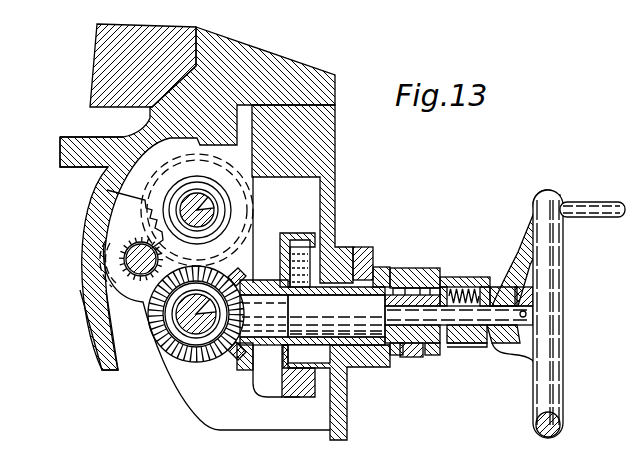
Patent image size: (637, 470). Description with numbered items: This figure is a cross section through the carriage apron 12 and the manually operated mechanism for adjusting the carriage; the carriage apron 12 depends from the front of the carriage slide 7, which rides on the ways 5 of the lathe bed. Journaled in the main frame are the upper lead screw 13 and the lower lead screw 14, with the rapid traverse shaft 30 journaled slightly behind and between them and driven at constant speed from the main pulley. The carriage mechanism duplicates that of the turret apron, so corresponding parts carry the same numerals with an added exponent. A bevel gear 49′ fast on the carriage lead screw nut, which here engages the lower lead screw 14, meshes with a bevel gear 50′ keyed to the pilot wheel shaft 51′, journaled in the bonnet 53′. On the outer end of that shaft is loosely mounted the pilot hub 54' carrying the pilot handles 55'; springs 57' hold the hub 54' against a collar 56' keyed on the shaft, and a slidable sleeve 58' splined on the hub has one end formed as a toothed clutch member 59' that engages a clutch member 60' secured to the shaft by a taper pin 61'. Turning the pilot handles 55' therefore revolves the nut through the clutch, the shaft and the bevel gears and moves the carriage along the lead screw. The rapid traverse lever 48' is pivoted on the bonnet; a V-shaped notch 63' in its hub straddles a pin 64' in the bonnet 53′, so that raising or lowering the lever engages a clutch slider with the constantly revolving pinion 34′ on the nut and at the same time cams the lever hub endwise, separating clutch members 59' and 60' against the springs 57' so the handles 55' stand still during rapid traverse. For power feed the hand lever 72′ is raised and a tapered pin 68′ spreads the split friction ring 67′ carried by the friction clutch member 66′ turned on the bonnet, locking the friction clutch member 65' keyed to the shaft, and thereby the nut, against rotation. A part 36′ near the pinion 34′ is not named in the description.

The ways 5 is at (190, 78).
The carriage slide 7 is at (262, 56).
The carriage apron 12 is at (327, 142).
The lead screw 13 is at (203, 202).
The lead screw 14 is at (183, 325).
The rapid traverse shaft 30 is at (130, 263).
The pinion 34′ is at (143, 202).
The pawl 36′ is at (122, 238).
The hand lever 48' is at (412, 287).
The bevel gear 49′ is at (182, 367).
The bevel gear 50′ is at (245, 355).
The pilot wheel shaft 51′ is at (386, 316).
The bonnet 53′ is at (348, 426).
The pilot hub 54' is at (523, 283).
The pilot handles 55' is at (579, 314).
The collar 56' is at (555, 276).
The springs 57' is at (469, 277).
The slidable sleeve 58' is at (465, 271).
The toothed clutch member 59' is at (467, 352).
The clutch member 60' is at (425, 370).
The taper pin 61' is at (412, 278).
The V-shaped notch 63' is at (416, 378).
The pin 64' is at (380, 371).
The friction clutch member 65' is at (280, 425).
The friction clutch member 66′ is at (293, 375).
The split friction ring 67′ is at (310, 387).
The tapered pin 68′ is at (300, 247).
The hand lever 72′ is at (362, 247).